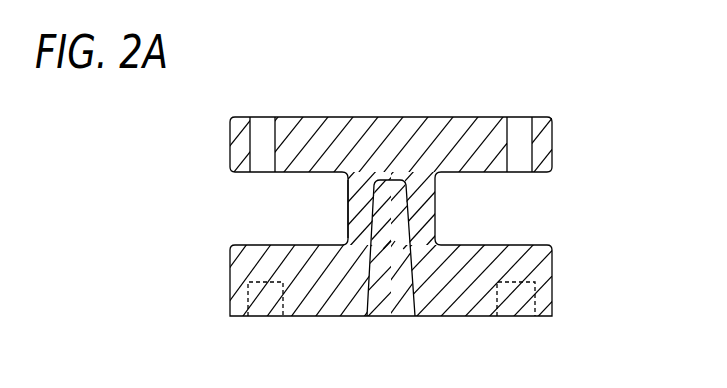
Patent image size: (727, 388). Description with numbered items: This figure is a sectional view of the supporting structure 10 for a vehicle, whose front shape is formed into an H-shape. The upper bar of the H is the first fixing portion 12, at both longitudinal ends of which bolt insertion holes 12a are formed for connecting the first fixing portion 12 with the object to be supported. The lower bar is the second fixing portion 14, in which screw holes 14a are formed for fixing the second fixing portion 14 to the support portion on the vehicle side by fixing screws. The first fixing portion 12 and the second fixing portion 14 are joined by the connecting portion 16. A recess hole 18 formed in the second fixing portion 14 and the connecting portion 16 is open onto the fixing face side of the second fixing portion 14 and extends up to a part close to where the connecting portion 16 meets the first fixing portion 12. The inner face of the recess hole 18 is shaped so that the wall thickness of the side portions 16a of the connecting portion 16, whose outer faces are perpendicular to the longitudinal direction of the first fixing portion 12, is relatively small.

The supporting structure 10 is at (348, 105).
The first fixing portion 12 is at (413, 117).
The bolt insertion hole 12a is at (519, 117).
The second fixing portion 14 is at (546, 266).
The screw hole 14a is at (515, 317).
The connecting portion 16 is at (437, 207).
The side portion 16a is at (357, 211).
The recess hole 18 is at (393, 304).